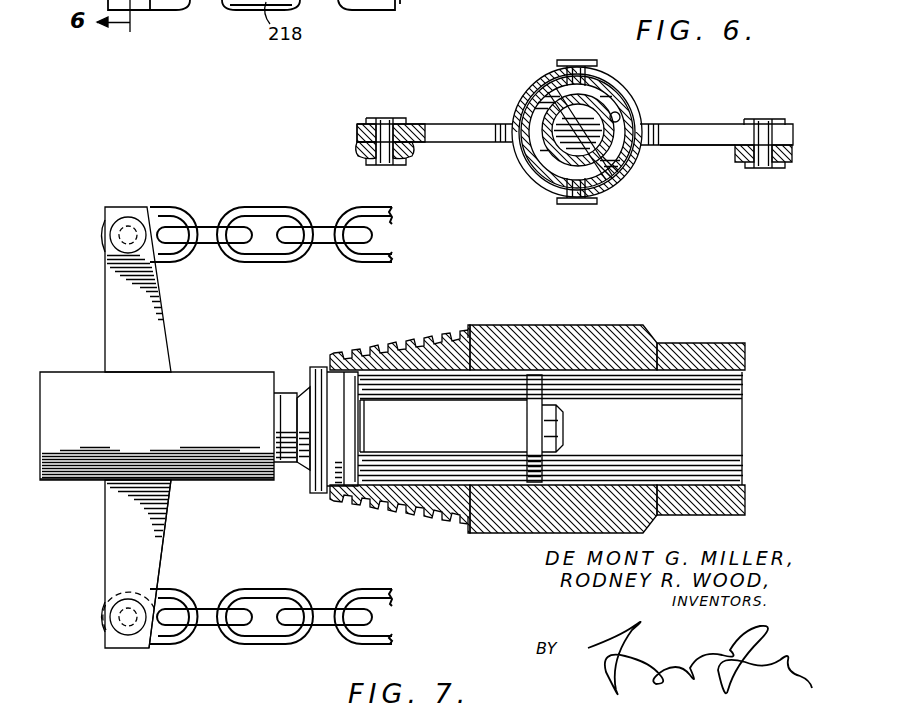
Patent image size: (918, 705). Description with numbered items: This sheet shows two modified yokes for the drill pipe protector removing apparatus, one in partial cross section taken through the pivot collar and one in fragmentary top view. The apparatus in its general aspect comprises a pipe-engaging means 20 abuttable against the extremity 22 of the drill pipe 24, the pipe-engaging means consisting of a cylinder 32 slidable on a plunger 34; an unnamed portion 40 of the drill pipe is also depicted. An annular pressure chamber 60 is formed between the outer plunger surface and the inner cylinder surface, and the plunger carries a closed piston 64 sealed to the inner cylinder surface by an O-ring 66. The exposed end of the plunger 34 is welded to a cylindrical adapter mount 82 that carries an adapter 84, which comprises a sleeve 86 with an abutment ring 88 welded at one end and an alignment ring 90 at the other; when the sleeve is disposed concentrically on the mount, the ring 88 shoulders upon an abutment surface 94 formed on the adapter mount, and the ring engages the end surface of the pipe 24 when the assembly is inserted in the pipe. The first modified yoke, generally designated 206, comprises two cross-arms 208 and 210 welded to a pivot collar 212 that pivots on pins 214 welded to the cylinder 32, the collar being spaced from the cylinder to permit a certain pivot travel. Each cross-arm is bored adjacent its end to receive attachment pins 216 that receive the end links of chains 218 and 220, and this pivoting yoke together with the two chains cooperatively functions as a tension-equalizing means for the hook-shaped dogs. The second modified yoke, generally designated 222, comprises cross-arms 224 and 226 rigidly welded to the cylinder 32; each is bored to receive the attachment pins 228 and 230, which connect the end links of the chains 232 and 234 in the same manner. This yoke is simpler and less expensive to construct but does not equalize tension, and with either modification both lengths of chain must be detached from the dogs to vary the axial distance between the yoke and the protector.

In FIG. 7, the pipe-engaging means 20 is at (62, 492).
In FIG. 7, the extremity of the drill pipe 22 is at (334, 352).
In FIG. 7, the drill pipe 24 is at (702, 344).
In FIG. 6, the cylinder 32 is at (622, 95).
In FIG. 7, the cylinder 32 is at (206, 374).
In FIG. 6, the plunger 34 is at (546, 140).
In FIG. 7, the plunger 34 is at (290, 466).
In FIG. 7, the body intermediate portion 40 is at (608, 326).
In FIG. 6, the annular pressure chamber 60 is at (620, 116).
In FIG. 6, the closed piston 64 is at (612, 166).
In FIG. 7, the O-ring 66 is at (318, 366).
In FIG. 7, the adapter mount 82 is at (560, 422).
In FIG. 7, the adapter 84 is at (411, 472).
In FIG. 7, the sleeve 86 is at (443, 426).
In FIG. 7, the abutment ring 88 is at (322, 488).
In FIG. 7, the alignment ring 90 is at (546, 462).
In FIG. 7, the abutment surface 94 is at (309, 388).
In FIG. 6, the yoke 206 is at (697, 122).
In FIG. 6, the cross-arm 208 is at (452, 124).
In FIG. 6, the cross-arm 210 is at (687, 146).
In FIG. 6, the pivot collar 212 is at (530, 88).
In FIG. 6, the pins 214 is at (574, 59).
In FIG. 6, the attachment pins 216 is at (385, 126).
In FIG. 6, the chain 218 is at (410, 152).
In FIG. 6, the chain 220 is at (740, 156).
In FIG. 7, the yoke 222 is at (104, 546).
In FIG. 7, the cross-arm 224 is at (115, 322).
In FIG. 7, the cross-arm 226 is at (150, 562).
In FIG. 7, the attachment pin 228 is at (128, 219).
In FIG. 7, the attachment pin 230 is at (128, 630).
In FIG. 7, the chain 232 is at (266, 207).
In FIG. 7, the chain 234 is at (268, 645).